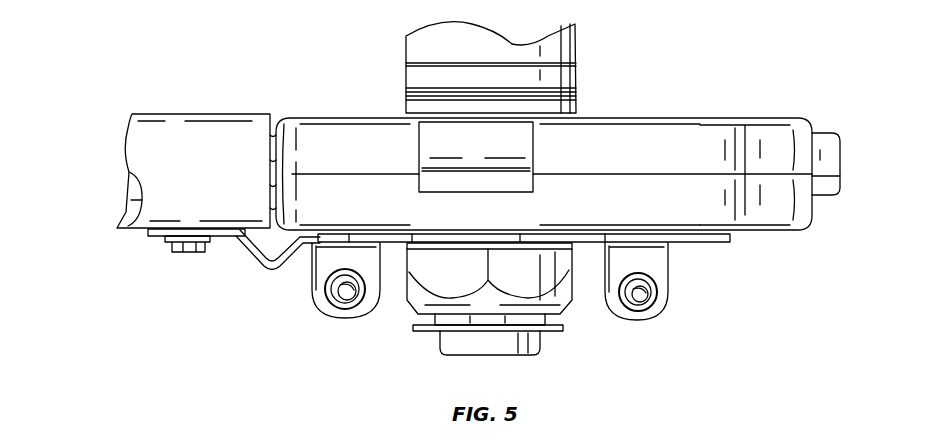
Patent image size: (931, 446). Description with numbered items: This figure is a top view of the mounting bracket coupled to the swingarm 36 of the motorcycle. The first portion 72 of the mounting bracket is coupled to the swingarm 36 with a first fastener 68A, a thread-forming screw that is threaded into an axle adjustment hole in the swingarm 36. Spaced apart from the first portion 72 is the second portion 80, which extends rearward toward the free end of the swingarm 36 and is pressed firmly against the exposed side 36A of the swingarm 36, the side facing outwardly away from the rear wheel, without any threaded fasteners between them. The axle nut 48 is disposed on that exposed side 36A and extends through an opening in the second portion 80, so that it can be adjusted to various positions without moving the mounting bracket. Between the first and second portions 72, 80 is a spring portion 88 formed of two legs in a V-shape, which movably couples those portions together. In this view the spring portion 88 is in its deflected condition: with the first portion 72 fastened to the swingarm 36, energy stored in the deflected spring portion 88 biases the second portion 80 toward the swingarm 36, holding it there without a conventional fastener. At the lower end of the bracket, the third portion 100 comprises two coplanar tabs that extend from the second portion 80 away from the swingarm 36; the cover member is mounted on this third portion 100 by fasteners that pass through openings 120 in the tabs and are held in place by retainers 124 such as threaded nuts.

The swingarm 36 is at (478, 162).
The exposed side of the swingarm 36A is at (766, 244).
The axle nut 48 is at (563, 300).
The first fastener 68A is at (190, 253).
The first portion 72 is at (150, 232).
The second portion 80 is at (597, 240).
The spring portion 88 is at (271, 283).
The third portion 100 is at (508, 309).
The openings in the third portion 120 is at (338, 293).
The retainers 124 is at (347, 305).